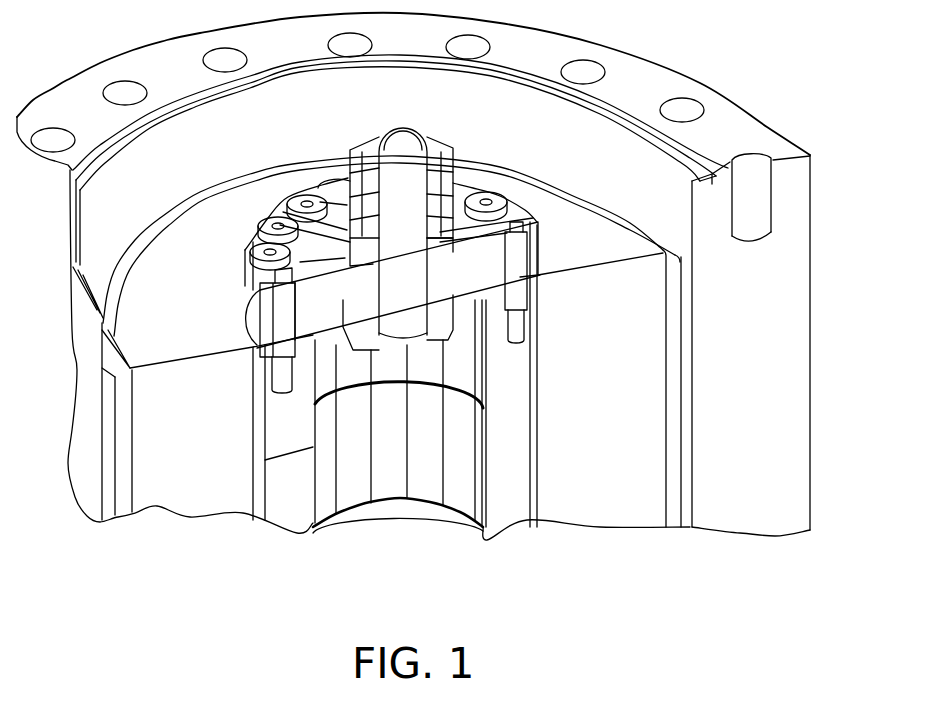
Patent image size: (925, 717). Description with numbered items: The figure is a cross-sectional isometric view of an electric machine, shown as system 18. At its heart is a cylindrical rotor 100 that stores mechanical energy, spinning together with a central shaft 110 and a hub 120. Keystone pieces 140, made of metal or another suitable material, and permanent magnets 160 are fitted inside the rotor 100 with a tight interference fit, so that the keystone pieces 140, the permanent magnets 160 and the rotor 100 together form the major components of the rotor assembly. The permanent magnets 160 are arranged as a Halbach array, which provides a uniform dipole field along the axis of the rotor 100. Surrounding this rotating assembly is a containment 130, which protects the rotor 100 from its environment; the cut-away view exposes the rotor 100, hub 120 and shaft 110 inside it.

The system 18 is at (852, 413).
The cylindrical rotor 100 is at (623, 415).
The shaft 110 is at (398, 150).
The hub 120 is at (250, 293).
The containment 130 is at (778, 405).
The keystone pieces 140 is at (273, 418).
The permanent magnets 160 is at (516, 465).